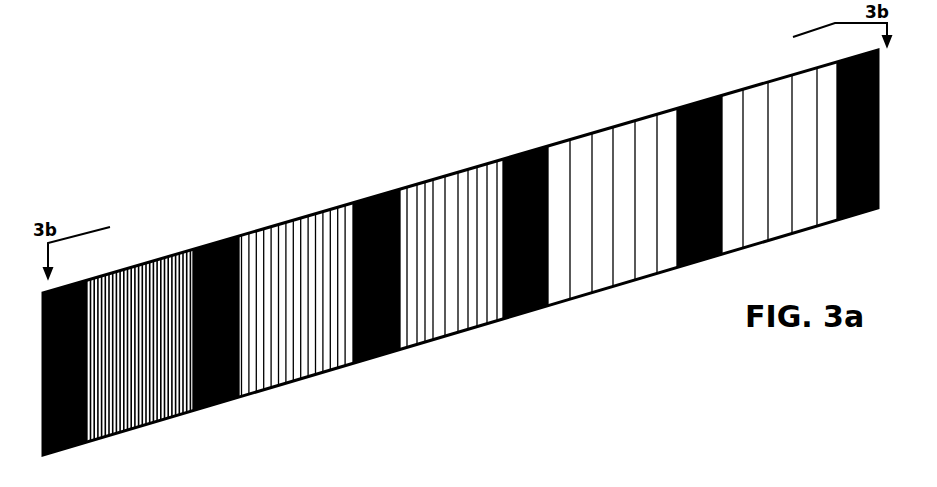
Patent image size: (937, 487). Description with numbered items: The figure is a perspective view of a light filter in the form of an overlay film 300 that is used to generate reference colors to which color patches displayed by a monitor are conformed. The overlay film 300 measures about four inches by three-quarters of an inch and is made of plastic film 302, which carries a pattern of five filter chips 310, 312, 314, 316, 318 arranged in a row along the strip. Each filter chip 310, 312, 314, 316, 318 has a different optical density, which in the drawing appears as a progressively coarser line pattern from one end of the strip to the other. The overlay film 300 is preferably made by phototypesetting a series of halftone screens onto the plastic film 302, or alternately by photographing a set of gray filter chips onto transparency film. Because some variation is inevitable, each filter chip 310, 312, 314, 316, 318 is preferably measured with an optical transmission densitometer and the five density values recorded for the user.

The overlay film 300 is at (460, 268).
The plastic film 302 is at (55, 450).
The filter chip 310 is at (152, 407).
The filter chip 312 is at (297, 362).
The filter chip 314 is at (451, 318).
The filter chip 316 is at (608, 273).
The filter chip 318 is at (782, 220).